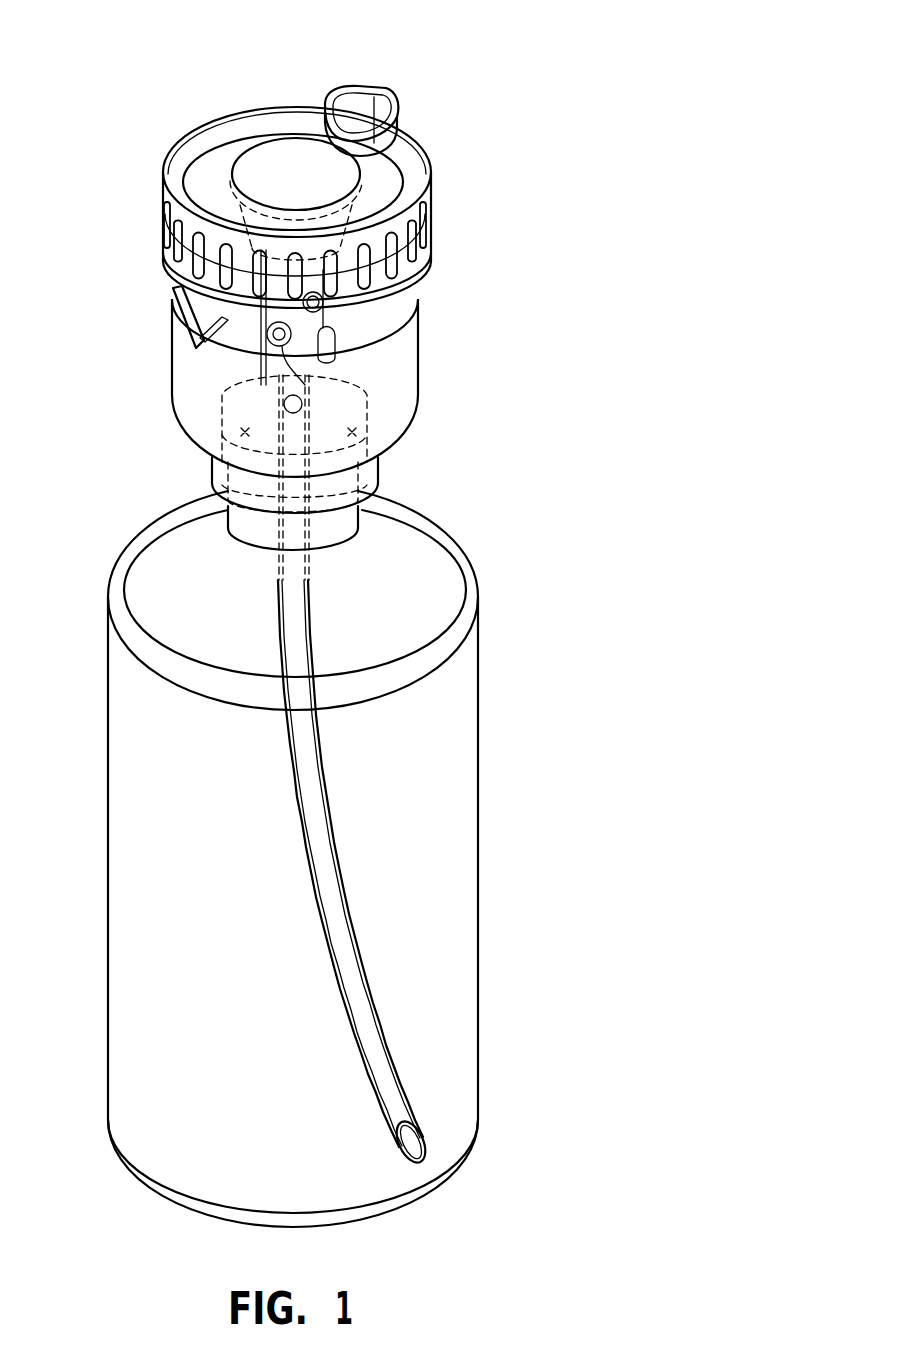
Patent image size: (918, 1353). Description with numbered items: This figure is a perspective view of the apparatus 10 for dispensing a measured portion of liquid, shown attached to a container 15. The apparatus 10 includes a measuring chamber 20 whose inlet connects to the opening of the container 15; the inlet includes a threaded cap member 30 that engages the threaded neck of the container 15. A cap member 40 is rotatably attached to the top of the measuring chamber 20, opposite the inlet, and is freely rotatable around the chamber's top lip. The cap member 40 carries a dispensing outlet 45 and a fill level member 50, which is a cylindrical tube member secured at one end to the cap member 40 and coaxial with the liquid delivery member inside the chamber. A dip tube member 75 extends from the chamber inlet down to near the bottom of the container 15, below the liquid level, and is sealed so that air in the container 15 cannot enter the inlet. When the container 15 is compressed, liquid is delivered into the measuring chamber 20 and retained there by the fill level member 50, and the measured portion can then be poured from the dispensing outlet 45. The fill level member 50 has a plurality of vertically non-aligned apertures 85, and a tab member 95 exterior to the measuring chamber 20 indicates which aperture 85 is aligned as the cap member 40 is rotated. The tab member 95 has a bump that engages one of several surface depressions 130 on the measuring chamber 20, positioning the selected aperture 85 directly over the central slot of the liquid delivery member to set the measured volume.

The apparatus 10 is at (528, 251).
The container 15 is at (480, 990).
The measuring chamber 20 is at (420, 370).
The threaded cap member 30 is at (252, 530).
The cap member 40 is at (237, 137).
The dispensing outlet 45 is at (352, 85).
The fill level member 50 is at (258, 381).
The dip tube member 75 is at (330, 818).
The apertures 85 is at (380, 456).
The tab member 95 is at (172, 318).
The surface depressions 130 is at (423, 284).